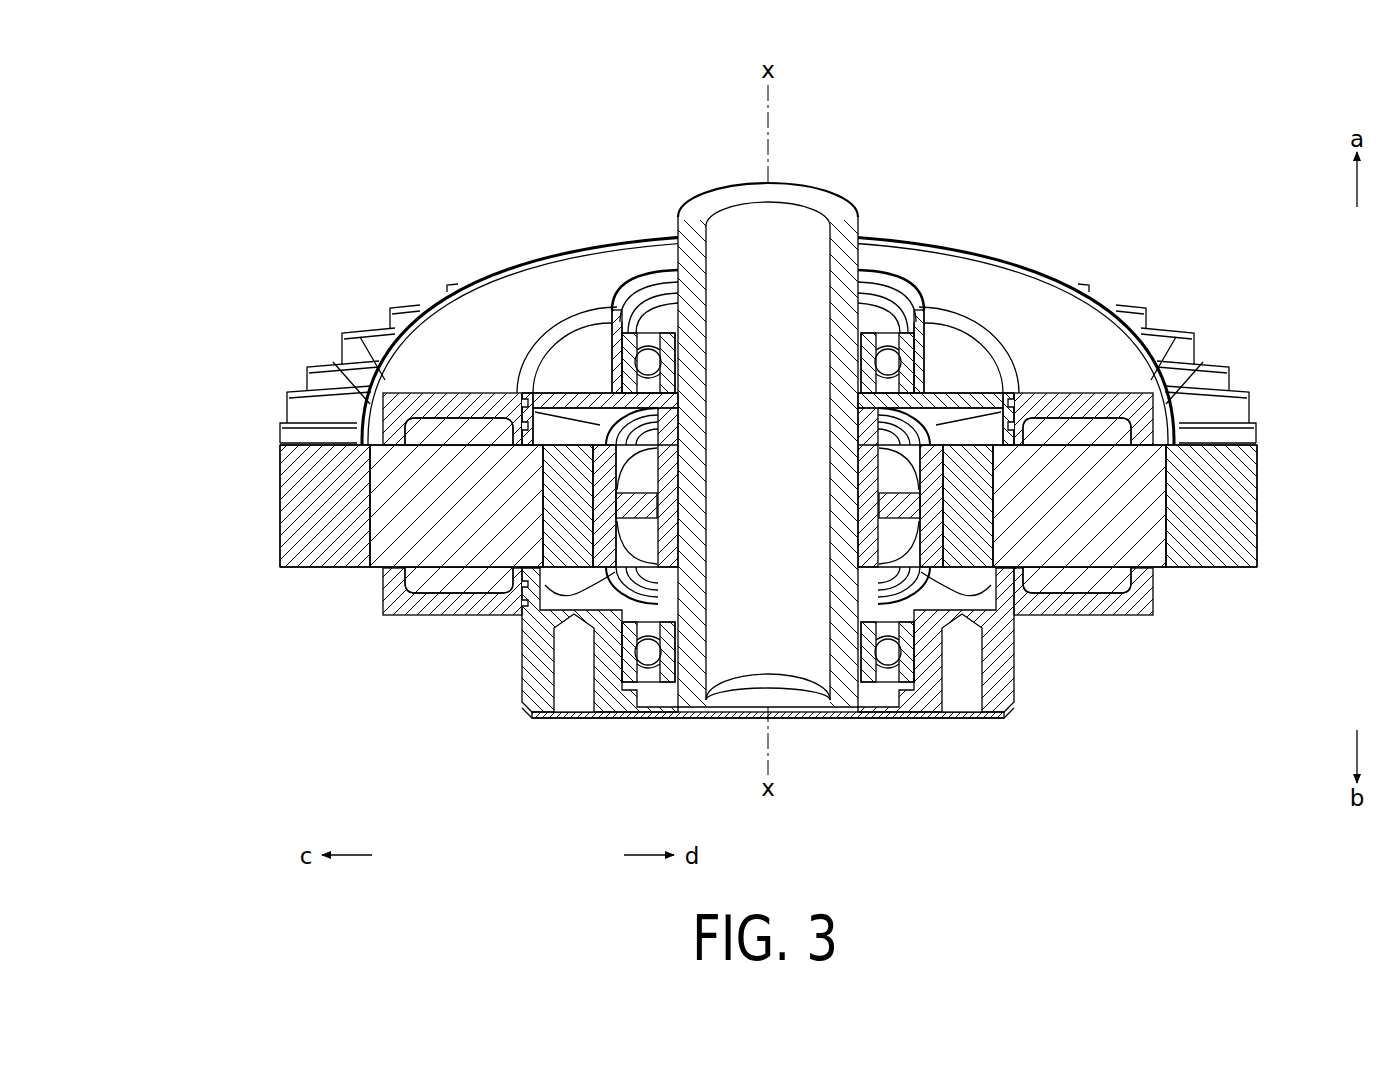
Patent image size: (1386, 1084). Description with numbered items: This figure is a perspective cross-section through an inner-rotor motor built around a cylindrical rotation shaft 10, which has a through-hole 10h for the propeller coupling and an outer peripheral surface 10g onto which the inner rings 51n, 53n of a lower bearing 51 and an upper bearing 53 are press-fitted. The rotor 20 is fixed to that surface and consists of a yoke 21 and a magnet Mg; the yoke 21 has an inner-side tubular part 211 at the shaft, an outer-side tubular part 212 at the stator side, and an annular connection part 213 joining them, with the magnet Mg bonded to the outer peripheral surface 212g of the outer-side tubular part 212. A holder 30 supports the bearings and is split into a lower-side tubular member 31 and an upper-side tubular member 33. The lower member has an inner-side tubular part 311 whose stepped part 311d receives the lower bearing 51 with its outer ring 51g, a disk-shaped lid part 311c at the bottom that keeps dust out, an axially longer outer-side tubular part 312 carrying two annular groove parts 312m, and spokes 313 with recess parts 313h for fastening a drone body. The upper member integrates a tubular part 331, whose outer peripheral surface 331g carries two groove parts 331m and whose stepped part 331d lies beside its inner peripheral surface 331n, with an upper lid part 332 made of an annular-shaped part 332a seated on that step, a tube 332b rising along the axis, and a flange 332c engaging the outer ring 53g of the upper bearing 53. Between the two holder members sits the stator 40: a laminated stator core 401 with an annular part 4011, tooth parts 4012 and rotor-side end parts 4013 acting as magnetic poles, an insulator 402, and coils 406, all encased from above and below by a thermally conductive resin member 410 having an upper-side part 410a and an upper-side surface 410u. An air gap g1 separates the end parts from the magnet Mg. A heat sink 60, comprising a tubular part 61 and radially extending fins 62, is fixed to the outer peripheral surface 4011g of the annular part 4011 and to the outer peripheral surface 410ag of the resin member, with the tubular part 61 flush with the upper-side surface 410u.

The rotation shaft 10 is at (812, 184).
The through-hole 10h is at (745, 228).
The outer peripheral surface 10g is at (868, 316).
The rotor 20 is at (833, 506).
The yoke 21 is at (948, 505).
The inner-side tubular part 211 is at (1000, 462).
The outer-side tubular part 212 is at (1000, 532).
The outer peripheral surface 212g is at (1032, 575).
The connection part 213 is at (985, 472).
The magnet Mg is at (1030, 525).
The holder 30 is at (492, 260).
The lower-side tubular member 31 is at (1264, 725).
The inner-side tubular part 311 is at (826, 702).
The lid part 311c is at (745, 718).
The stepped part 311d is at (632, 690).
The outer-side tubular part 312 is at (536, 614).
The groove parts 312m is at (527, 606).
The spokes 313 is at (580, 640).
The recess parts 313h is at (962, 670).
The upper-side tubular member 33 is at (620, 143).
The tubular part 331 is at (704, 291).
The stepped part 331d is at (996, 393).
The outer peripheral surface 331g is at (522, 432).
The groove parts 331m is at (555, 408).
The inner peripheral surface 331n is at (540, 397).
The upper lid part 332 is at (707, 256).
The annular-shaped part 332a is at (752, 183).
The tube 332b is at (614, 362).
The flange 332c is at (636, 322).
The stator 40 is at (1266, 45).
The stator core 401 is at (702, 526).
The annular part 4011 is at (540, 522).
The outer peripheral surface 4011g is at (460, 505).
The tooth parts 4012 is at (580, 533).
The end part 4013 is at (430, 522).
The insulator 402 is at (858, 258).
The coils 406 is at (1130, 592).
The resin member 410 is at (414, 360).
The upper-side part 410a is at (383, 420).
The outer peripheral surface 410ag is at (335, 398).
The upper-side surface 410u is at (1080, 333).
The bearing 51 is at (783, 729).
The inner ring 51n is at (868, 662).
The outer ring 51g is at (900, 662).
The bearing 53 is at (822, 241).
The inner ring 53n is at (888, 348).
The outer ring 53g is at (918, 340).
The heat sink 60 is at (208, 368).
The tubular part 61 is at (338, 420).
The fins 62 is at (330, 384).
The air gap g1 is at (1000, 500).